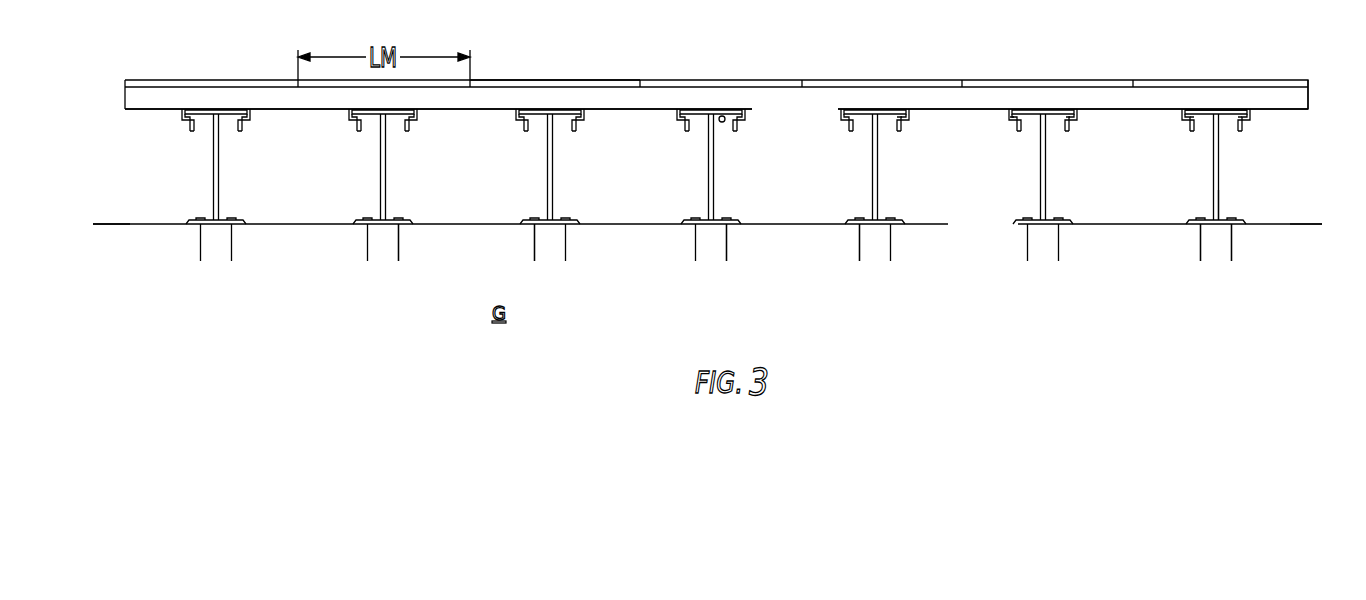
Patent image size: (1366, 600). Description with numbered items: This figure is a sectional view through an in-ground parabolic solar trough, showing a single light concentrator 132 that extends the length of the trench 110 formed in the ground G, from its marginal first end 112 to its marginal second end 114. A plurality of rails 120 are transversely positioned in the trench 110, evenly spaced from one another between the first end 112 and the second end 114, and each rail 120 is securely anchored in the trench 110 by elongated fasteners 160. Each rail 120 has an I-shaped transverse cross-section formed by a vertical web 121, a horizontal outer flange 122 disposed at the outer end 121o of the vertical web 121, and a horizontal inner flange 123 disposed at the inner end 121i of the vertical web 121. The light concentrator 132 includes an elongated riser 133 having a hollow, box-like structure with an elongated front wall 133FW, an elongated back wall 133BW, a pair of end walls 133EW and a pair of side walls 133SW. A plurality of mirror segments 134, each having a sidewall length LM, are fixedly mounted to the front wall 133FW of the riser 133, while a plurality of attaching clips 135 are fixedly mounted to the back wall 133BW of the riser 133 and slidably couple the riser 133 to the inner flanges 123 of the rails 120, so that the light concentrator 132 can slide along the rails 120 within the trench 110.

The trench 110 is at (285, 224).
The first end 112 is at (106, 198).
The second end 114 is at (1328, 203).
The rail 120 is at (547, 158).
The vertical web 121 is at (1212, 170).
The inner end of the vertical web 121i is at (1222, 116).
The outer end of the vertical web 121o is at (1221, 213).
The horizontal outer flange 122 is at (1208, 225).
The horizontal inner flange 123 is at (1205, 112).
The light concentrator 132 is at (235, 78).
The riser 133 is at (835, 80).
The front wall 133FW is at (583, 92).
The side wall 133SW is at (124, 104).
The end wall 133EW is at (822, 117).
The back wall 133BW is at (630, 110).
The mirror segment 134 is at (1051, 80).
The attaching clip 135 is at (900, 118).
The elongated fastener 160 is at (534, 243).